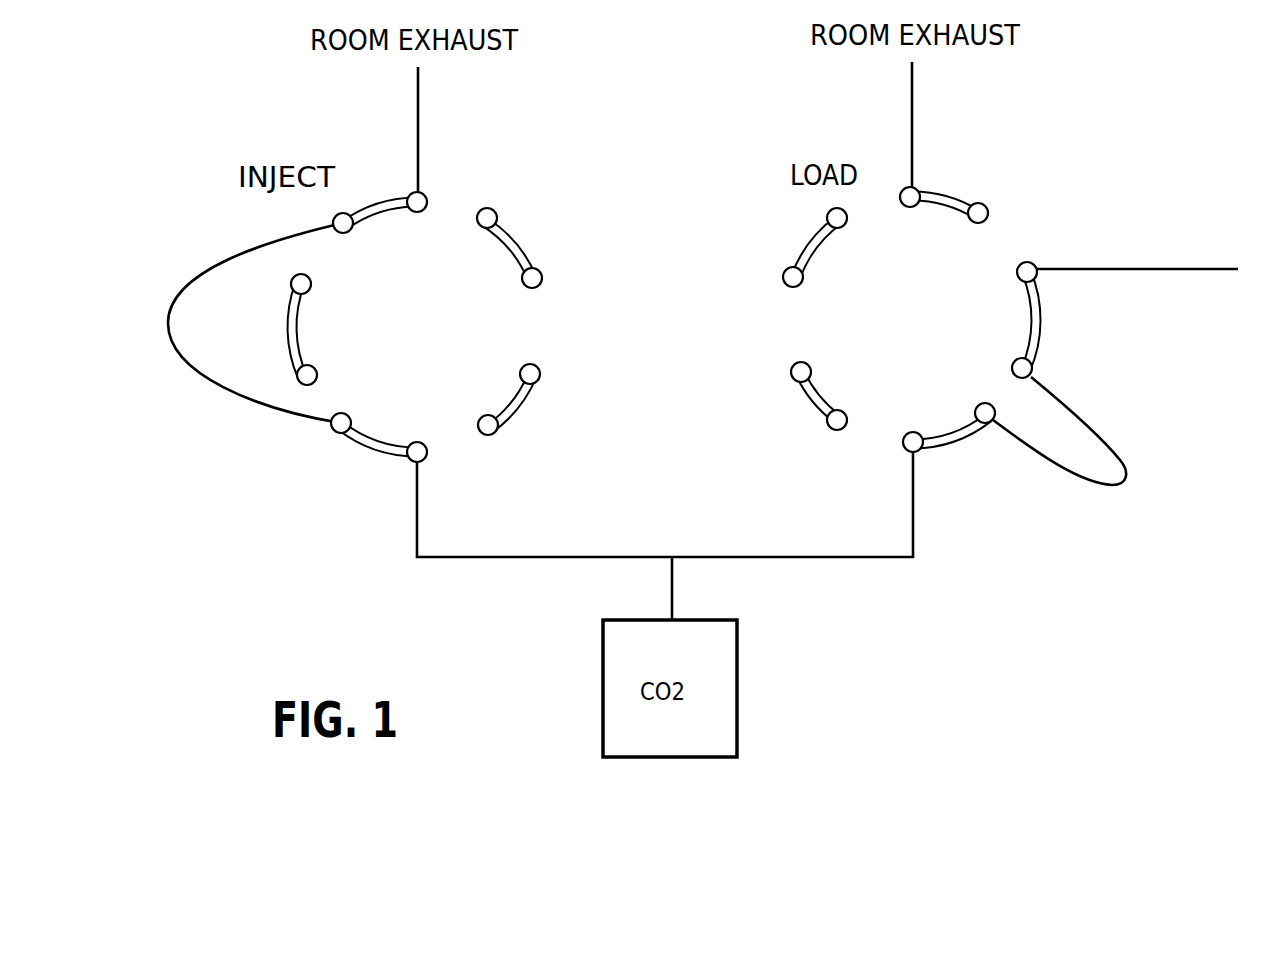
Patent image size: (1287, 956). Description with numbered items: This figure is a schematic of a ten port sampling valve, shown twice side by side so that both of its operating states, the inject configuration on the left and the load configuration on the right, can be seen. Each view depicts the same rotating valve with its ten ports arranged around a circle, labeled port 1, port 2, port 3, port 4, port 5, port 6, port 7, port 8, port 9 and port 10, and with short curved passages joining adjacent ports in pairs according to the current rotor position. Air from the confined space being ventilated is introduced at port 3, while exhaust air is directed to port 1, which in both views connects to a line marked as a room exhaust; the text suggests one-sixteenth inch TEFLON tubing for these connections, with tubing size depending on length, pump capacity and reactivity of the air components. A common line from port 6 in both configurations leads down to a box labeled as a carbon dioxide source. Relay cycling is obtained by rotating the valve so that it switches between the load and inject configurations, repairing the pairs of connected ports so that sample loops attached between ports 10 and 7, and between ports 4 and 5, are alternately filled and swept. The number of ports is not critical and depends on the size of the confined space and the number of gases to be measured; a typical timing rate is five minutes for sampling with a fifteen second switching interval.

The port 1 is at (668, 217).
The port 2 is at (722, 231).
The port 3 is at (763, 281).
The port 4 is at (762, 360).
The port 5 is at (729, 404).
The port 6 is at (665, 429).
The port 7 is at (598, 409).
The port 8 is at (563, 357).
The port 9 is at (562, 288).
The port 10 is at (606, 237).